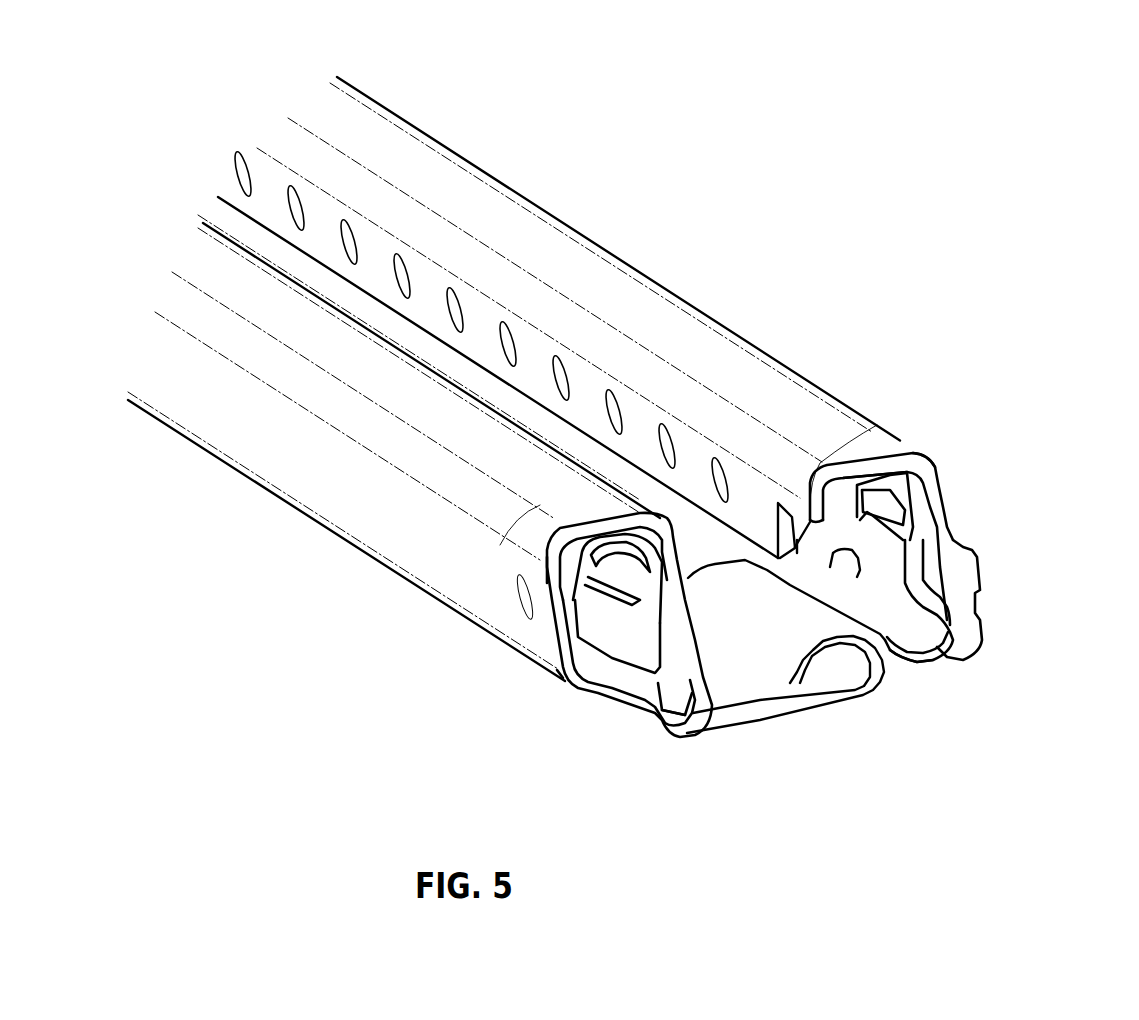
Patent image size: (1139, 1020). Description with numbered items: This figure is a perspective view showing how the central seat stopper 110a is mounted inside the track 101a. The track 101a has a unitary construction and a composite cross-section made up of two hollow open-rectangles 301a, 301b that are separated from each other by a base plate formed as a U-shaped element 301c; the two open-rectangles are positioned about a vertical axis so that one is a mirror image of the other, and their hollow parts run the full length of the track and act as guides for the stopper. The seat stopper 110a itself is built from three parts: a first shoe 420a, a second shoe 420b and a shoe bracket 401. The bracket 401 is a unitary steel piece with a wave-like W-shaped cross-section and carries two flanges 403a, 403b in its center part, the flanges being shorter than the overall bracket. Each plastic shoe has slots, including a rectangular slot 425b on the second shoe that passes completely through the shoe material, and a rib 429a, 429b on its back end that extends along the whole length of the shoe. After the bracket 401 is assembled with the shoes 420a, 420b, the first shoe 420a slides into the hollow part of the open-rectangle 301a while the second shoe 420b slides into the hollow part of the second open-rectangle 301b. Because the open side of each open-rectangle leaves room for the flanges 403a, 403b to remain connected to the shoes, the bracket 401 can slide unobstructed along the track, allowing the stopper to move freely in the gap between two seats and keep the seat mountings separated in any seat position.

The track 101a is at (713, 322).
The seat stopper 110a is at (681, 705).
The open-rectangle 301a is at (525, 555).
The open-rectangle 301b is at (925, 472).
The U-shaped element 301c is at (807, 710).
The shoe bracket 401 is at (940, 667).
The flange 403a is at (522, 580).
The flange 403b is at (820, 460).
The shoe 420a is at (633, 717).
The shoe 420b is at (978, 627).
The rectangular slot 425b is at (865, 465).
The rib 429a is at (525, 620).
The rib 429b is at (980, 573).